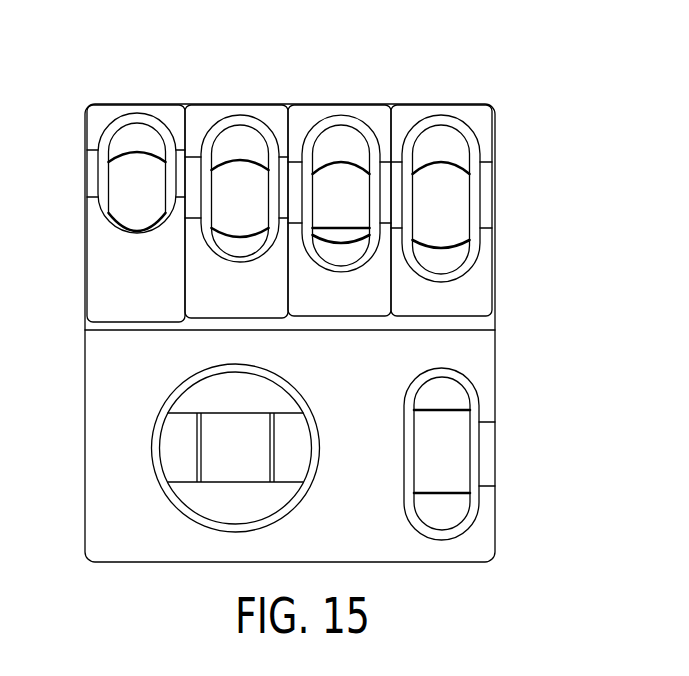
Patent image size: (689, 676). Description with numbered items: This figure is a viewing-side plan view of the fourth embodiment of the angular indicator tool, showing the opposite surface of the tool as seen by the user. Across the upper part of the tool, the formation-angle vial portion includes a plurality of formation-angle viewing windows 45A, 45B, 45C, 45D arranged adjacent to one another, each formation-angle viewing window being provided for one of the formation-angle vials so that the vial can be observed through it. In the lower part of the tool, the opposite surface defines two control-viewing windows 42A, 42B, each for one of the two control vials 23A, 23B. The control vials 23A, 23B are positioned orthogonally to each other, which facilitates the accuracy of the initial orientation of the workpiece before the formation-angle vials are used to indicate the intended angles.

The formation-angle viewing window 45A is at (446, 138).
The formation-angle viewing window 45B is at (342, 138).
The formation-angle viewing window 45C is at (240, 137).
The formation-angle viewing window 45D is at (137, 137).
The control-viewing window 42A is at (220, 397).
The control-viewing window 42B is at (448, 453).
The control vial 23A is at (222, 463).
The control vial 23B is at (450, 512).